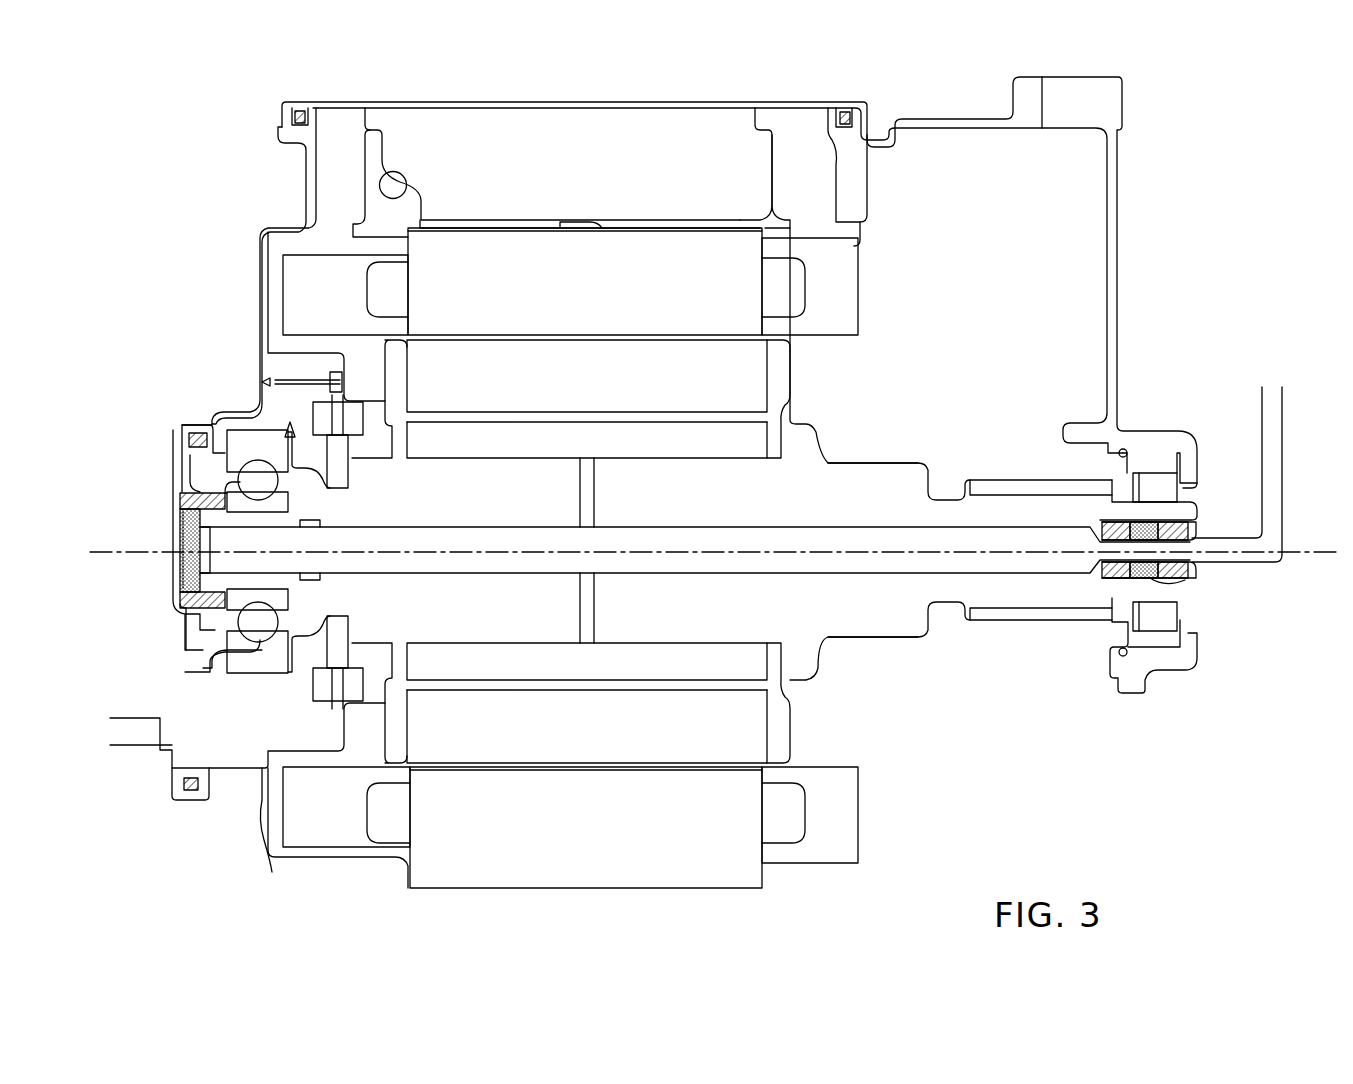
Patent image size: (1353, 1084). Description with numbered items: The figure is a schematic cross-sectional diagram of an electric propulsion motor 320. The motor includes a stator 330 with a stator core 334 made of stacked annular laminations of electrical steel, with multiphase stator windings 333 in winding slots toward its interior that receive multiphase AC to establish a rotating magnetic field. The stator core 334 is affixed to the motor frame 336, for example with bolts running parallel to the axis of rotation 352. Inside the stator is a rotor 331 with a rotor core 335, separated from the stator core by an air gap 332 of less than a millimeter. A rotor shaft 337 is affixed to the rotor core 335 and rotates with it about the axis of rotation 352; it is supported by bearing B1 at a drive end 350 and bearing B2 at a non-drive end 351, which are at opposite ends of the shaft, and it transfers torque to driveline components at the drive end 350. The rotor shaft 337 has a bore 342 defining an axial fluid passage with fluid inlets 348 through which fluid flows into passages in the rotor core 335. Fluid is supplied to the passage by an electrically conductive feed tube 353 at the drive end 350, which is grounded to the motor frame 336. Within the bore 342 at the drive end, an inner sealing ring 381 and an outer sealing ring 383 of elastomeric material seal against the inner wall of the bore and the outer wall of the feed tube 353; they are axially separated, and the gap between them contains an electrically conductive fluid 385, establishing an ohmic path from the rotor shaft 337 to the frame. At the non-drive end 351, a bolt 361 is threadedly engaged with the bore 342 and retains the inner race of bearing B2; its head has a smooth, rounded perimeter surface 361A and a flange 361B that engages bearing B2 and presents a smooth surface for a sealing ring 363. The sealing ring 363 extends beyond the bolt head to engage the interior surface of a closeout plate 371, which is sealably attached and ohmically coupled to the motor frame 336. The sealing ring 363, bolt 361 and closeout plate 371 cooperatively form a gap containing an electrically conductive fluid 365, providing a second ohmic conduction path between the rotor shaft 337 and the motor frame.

The electric propulsion motor 320 is at (193, 256).
The stator 330 is at (885, 286).
The rotor 331 is at (884, 396).
The air gap 332 is at (800, 346).
The multiphase stator windings 333 is at (360, 296).
The stator core 334 is at (585, 555).
The rotor core 335 is at (571, 551).
The motor frame 336 is at (624, 102).
The rotor shaft 337 is at (820, 472).
The bore 342 is at (695, 550).
The fluid inlet 348 is at (592, 556).
The drive end 350 is at (973, 680).
The non-drive end 351 is at (205, 388).
The axis of rotation 352 is at (125, 545).
The feed tube 353 is at (1260, 410).
The bolt 361 is at (190, 570).
The perimeter surface 361A is at (180, 606).
The flange 361B is at (197, 626).
The sealing ring 363 is at (176, 495).
The electrically conductive fluid 365 is at (186, 530).
The closeout plate 371 is at (172, 440).
The inner sealing ring 381 is at (1108, 592).
The outer sealing ring 383 is at (1188, 530).
The electrically conductive fluid 385 is at (1162, 578).
The bearing B1 is at (1185, 612).
The bearing B2 is at (190, 650).